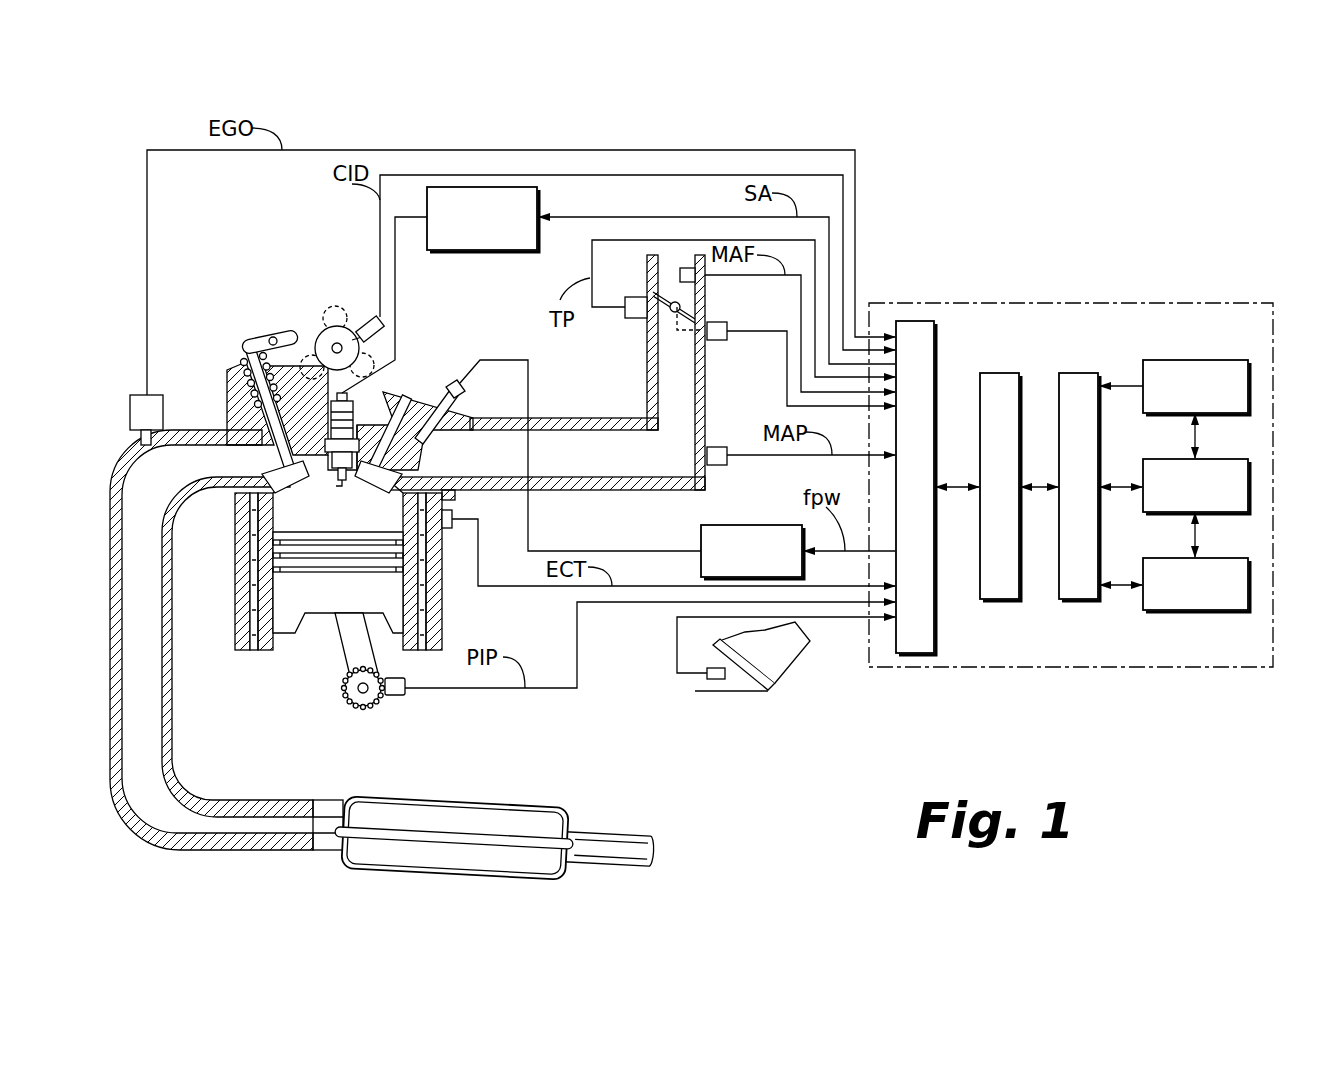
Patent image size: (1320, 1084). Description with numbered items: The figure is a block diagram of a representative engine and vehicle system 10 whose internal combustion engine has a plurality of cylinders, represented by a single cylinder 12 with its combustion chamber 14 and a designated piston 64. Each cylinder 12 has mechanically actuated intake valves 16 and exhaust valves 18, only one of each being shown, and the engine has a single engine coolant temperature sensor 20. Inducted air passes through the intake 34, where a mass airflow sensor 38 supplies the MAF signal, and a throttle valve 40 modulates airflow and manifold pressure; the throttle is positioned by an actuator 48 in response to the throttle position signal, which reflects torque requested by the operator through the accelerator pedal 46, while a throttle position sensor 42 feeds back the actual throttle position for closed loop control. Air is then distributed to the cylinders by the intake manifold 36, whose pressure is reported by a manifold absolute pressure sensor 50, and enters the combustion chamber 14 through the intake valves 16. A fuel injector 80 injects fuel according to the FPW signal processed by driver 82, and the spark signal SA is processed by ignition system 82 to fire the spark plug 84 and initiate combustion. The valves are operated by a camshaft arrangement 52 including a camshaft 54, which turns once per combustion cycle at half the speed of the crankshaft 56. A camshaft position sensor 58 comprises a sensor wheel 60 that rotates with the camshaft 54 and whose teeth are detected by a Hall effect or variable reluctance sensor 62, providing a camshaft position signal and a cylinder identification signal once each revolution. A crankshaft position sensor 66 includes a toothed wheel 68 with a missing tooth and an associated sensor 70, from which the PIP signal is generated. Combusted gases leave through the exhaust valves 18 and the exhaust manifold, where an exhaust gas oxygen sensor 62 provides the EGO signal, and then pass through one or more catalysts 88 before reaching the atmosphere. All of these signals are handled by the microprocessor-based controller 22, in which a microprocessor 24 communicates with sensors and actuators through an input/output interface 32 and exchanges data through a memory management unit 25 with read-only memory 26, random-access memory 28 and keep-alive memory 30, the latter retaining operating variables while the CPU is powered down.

The system 10 is at (250, 226).
The cylinder 12 is at (278, 643).
The combustion chamber 14 is at (350, 526).
The intake valve 16 is at (390, 477).
The exhaust valve 18 is at (290, 477).
The engine coolant temperature sensor 20 is at (453, 527).
The controller 22 is at (1055, 303).
The microprocessor 24 is at (1000, 373).
The memory management unit 25 is at (1078, 373).
The read-only memory 26 is at (1195, 360).
The random-access memory 28 is at (1170, 558).
The keep-alive memory 30 is at (1170, 459).
The input/output interface 32 is at (915, 321).
The intake 34 is at (673, 367).
The intake manifold 36 is at (590, 418).
The mass airflow sensor 38 is at (688, 268).
The throttle valve 40 is at (672, 313).
The throttle position sensor 42 is at (718, 322).
The accelerator pedal 46 is at (745, 683).
The actuator 48 is at (636, 297).
The manifold absolute pressure sensor 50 is at (718, 447).
The camshaft arrangement 52 is at (290, 318).
The camshaft 54 is at (330, 302).
The crankshaft 56 is at (348, 683).
The camshaft position sensor 58 is at (356, 311).
The sensor wheel 60 is at (360, 350).
The sensor 62 is at (386, 321).
The piston 64 is at (390, 637).
The crankshaft position sensor 66 is at (366, 716).
The toothed wheel 68 is at (357, 714).
The sensor 70 is at (393, 698).
The fuel injector 80 is at (460, 394).
The driver 82 is at (487, 187).
The spark plug 84 is at (327, 420).
The catalyst 88 is at (455, 797).